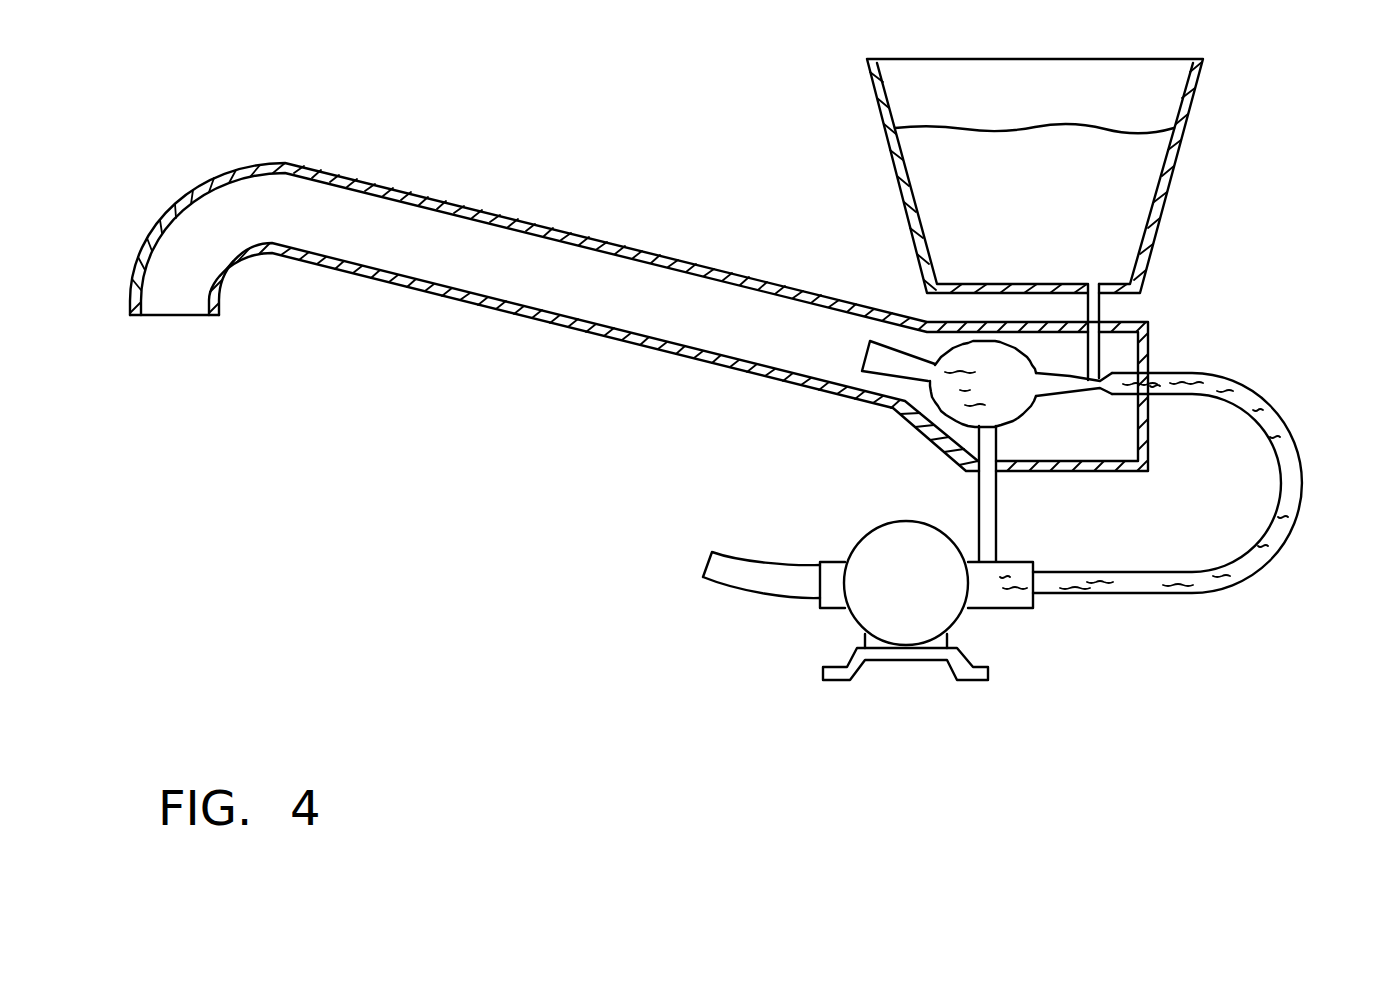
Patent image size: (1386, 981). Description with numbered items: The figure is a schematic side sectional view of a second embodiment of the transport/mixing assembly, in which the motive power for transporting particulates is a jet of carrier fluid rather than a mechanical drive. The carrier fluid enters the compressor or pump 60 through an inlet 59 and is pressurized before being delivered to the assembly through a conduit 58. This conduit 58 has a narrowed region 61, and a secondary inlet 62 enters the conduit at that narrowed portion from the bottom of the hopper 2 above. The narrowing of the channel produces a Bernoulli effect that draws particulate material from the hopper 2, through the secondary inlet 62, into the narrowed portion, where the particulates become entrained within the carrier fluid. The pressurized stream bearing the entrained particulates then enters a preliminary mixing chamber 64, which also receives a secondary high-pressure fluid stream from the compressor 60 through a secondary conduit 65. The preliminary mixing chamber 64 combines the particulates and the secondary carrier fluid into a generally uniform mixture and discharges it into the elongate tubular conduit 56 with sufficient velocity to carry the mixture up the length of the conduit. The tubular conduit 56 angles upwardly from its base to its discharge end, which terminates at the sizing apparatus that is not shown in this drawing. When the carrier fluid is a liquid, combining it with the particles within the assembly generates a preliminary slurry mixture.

The hopper 2 is at (1180, 148).
The tubular conduit 56 is at (639, 276).
The conduit 58 is at (1295, 448).
The inlet 59 is at (743, 578).
The compressor or pump 60 is at (875, 563).
The narrowed region 61 is at (1100, 388).
The secondary inlet 62 is at (1100, 304).
The preliminary mixing chamber 64 is at (948, 355).
The secondary conduit 65 is at (998, 484).